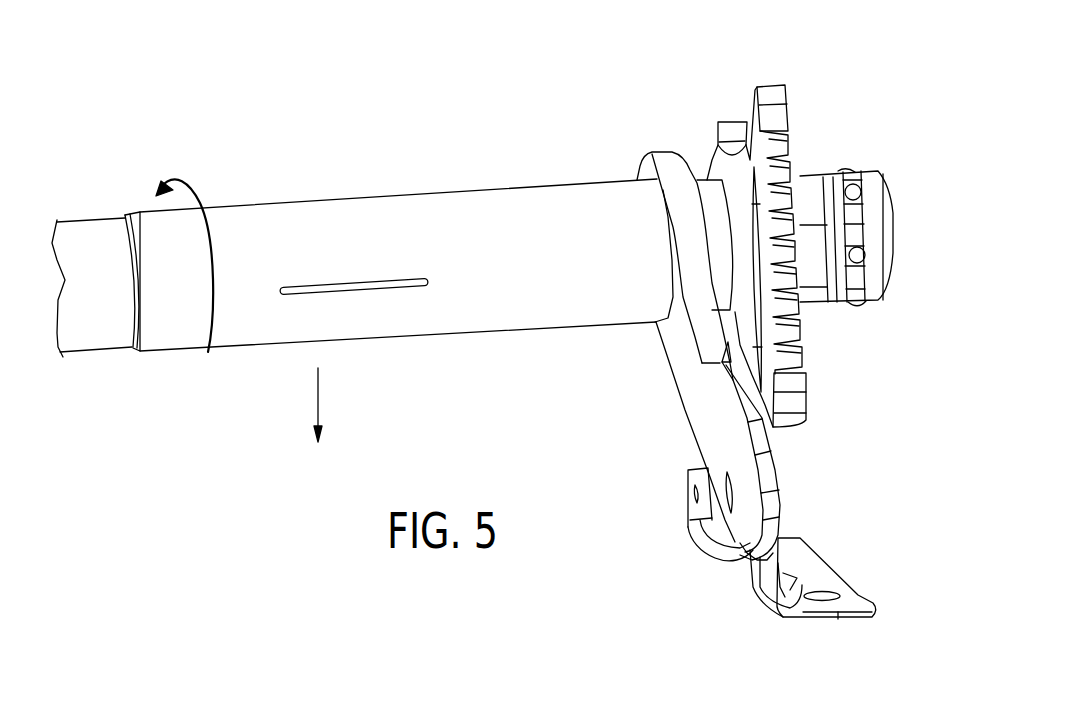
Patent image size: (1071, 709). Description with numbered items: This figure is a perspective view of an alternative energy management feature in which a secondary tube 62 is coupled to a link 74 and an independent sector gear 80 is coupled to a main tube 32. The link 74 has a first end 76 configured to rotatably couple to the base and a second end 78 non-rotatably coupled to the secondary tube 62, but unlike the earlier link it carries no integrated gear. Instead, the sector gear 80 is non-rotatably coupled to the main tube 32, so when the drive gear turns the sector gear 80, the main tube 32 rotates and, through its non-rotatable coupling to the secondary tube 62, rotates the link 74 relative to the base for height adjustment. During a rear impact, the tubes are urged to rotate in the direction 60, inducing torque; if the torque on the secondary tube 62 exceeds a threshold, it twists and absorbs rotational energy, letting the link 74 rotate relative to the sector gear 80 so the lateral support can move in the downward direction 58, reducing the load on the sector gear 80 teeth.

The main tube 32 is at (90, 228).
The secondary tube 62 is at (241, 206).
The direction 60 is at (208, 350).
The downward direction 58 is at (318, 395).
The second end 78 is at (656, 142).
The link 74 is at (688, 434).
The first end 76 is at (718, 562).
The sector gear 80 is at (772, 84).